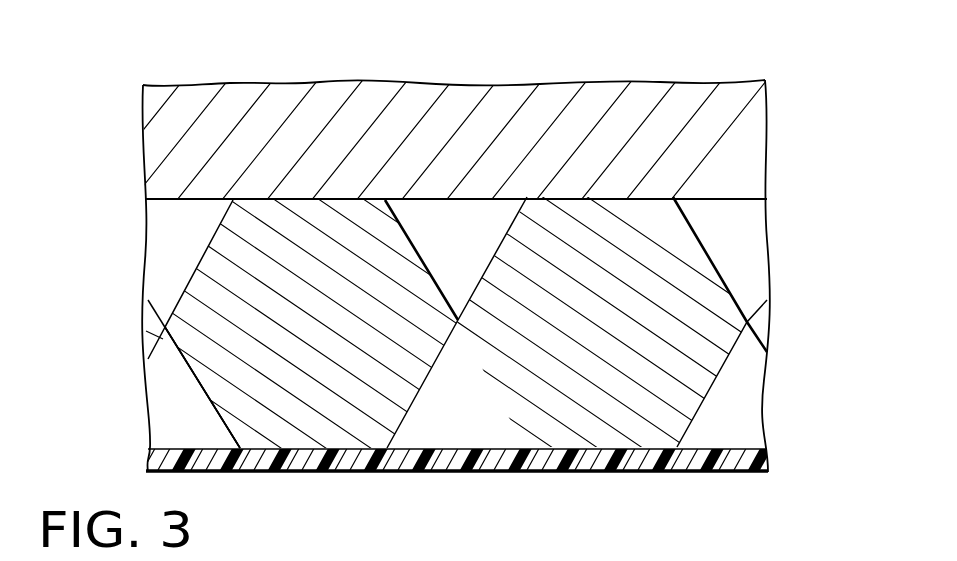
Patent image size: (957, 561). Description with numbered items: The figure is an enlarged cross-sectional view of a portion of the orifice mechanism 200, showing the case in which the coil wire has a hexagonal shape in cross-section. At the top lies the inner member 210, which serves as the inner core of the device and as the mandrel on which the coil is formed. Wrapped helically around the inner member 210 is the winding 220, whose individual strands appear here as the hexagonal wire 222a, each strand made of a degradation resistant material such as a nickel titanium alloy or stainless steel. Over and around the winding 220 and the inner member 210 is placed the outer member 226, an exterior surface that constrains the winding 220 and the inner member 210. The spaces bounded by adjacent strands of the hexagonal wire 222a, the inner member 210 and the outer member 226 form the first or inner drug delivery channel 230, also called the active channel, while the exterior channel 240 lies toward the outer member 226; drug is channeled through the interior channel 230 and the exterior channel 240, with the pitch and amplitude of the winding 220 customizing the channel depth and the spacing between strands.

The orifice mechanism 200 is at (406, 41).
The inner member 210 is at (165, 128).
The winding 220 is at (292, 456).
The hexagonal wire 222a is at (693, 276).
The outer member 226 is at (505, 466).
The first drug delivery channel 230 is at (170, 245).
The exterior channel 240 is at (172, 409).